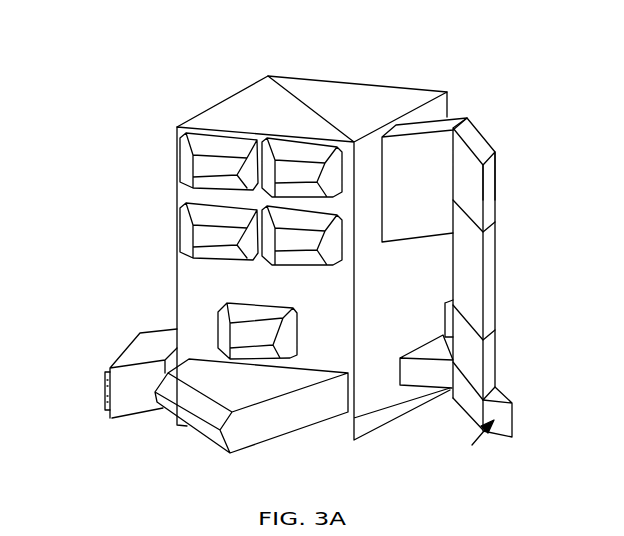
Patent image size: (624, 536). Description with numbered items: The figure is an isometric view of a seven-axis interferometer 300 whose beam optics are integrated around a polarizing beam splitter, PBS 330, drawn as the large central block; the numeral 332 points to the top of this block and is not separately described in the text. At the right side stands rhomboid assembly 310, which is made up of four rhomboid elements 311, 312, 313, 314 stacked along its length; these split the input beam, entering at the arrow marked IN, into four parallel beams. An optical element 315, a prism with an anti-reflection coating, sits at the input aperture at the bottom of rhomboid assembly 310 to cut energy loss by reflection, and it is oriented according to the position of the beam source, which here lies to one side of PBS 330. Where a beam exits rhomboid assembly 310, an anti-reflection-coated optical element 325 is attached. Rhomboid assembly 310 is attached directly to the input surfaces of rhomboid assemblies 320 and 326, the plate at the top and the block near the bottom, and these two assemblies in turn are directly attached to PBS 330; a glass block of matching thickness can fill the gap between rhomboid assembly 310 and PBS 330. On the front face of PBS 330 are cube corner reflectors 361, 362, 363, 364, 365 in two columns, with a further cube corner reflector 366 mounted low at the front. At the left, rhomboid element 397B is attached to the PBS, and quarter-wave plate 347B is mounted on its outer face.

The 7-axis interferometer 300 is at (90, 68).
The PBS 330 is at (342, 107).
The housing top 332 is at (287, 86).
The rhomboid assembly 320 is at (433, 120).
The rhomboid assembly 310 is at (472, 140).
The rhomboid element 314 is at (489, 186).
The rhomboid element 313 is at (487, 258).
The rhomboid element 312 is at (489, 346).
The rhomboid element 311 is at (458, 386).
The optical element 315 is at (503, 414).
The optical element 325 is at (452, 300).
The rhomboid assembly 326 is at (418, 354).
The cube corner reflector 361 is at (200, 148).
The cube corner reflector 362 is at (307, 147).
The cube corner reflector 363 is at (200, 216).
The cube corner reflector 364 is at (283, 262).
The cube corner reflector 365 is at (248, 308).
The cube corner reflector 366 is at (247, 435).
The rhomboid element 397B is at (162, 342).
The quarter-wave plate 347B is at (105, 390).